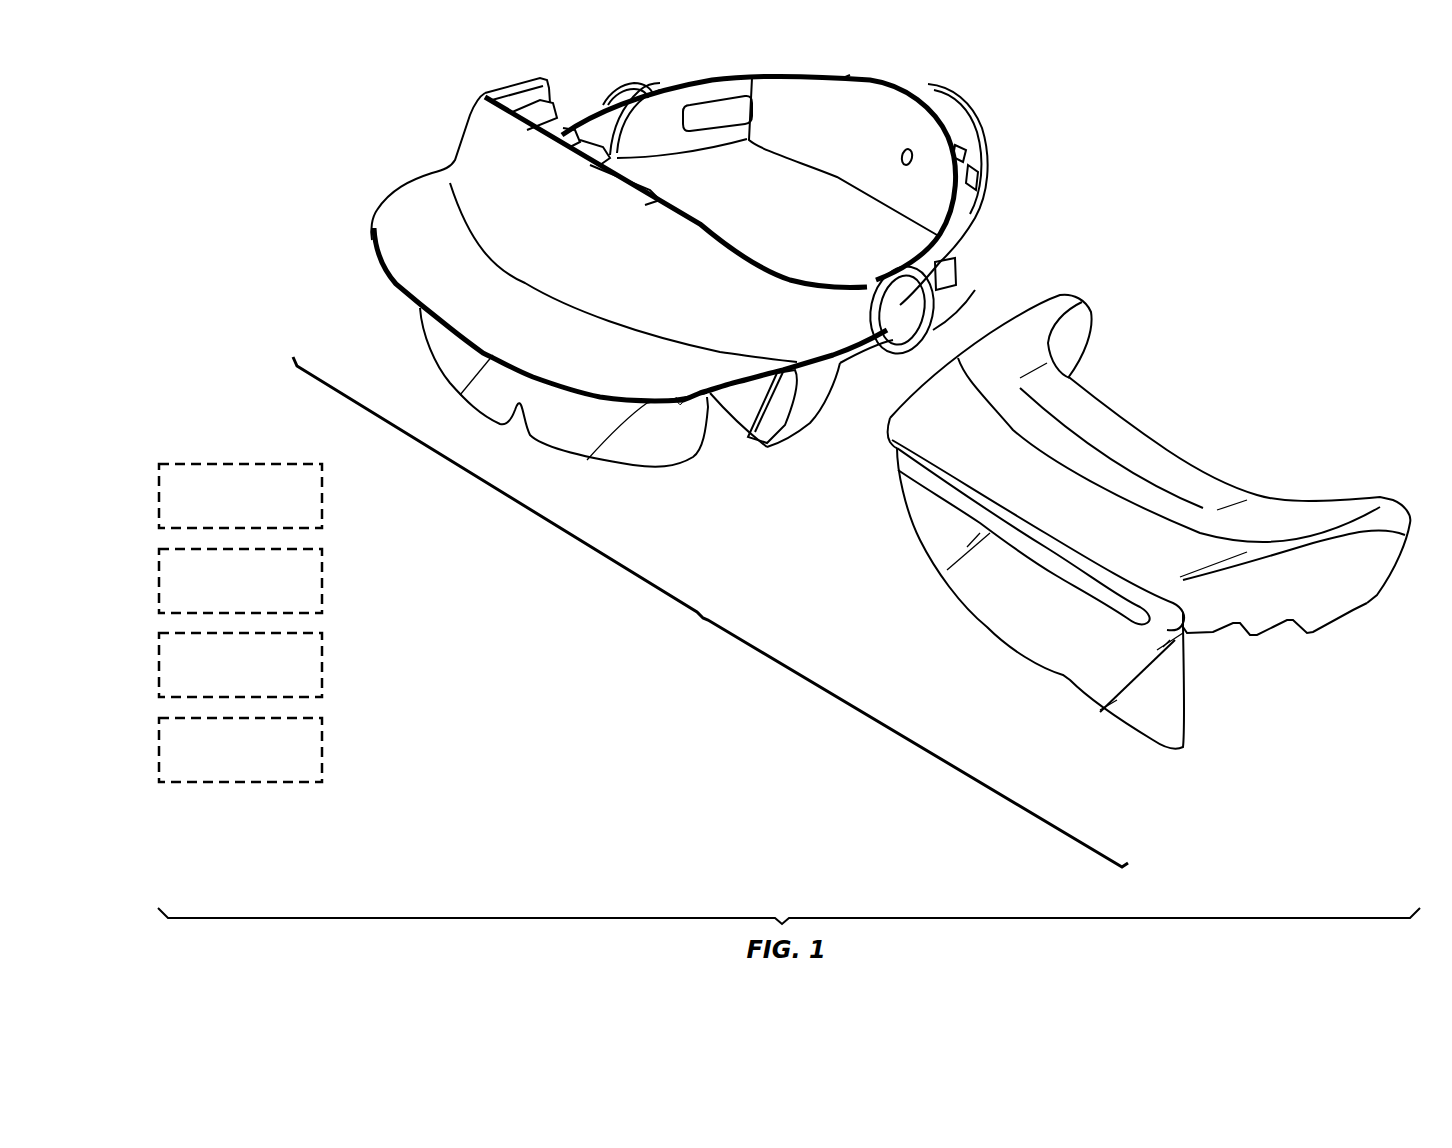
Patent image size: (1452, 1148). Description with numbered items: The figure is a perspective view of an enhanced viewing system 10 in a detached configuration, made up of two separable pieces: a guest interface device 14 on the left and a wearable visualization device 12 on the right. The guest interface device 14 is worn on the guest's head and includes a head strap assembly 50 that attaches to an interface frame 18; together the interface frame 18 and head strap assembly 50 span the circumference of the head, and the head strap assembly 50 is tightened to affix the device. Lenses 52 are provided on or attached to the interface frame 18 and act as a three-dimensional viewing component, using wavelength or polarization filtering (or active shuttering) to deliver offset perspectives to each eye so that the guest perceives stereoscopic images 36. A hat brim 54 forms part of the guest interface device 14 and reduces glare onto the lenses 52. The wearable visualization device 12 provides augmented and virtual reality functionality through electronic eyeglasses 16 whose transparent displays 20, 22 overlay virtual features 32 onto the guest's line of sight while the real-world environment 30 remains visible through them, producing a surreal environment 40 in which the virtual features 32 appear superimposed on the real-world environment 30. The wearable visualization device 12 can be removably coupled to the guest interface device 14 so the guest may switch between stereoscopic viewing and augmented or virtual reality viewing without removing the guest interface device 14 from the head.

The enhanced viewing system 10 is at (700, 618).
The wearable visualization device 12 is at (1149, 539).
The guest interface device 14 is at (683, 269).
The electronic eyeglasses 16 is at (1188, 705).
The interface frame 18 is at (724, 424).
The displays 20 is at (1323, 607).
The displays 22 is at (1127, 722).
The real-world environment 30 is at (322, 577).
The virtual features 32 is at (322, 661).
The 3-D images 36 is at (322, 492).
The surreal environment 40 is at (322, 746).
The head strap assembly 50 is at (819, 76).
The lenses 52 is at (603, 463).
The hat brim 54 is at (408, 232).